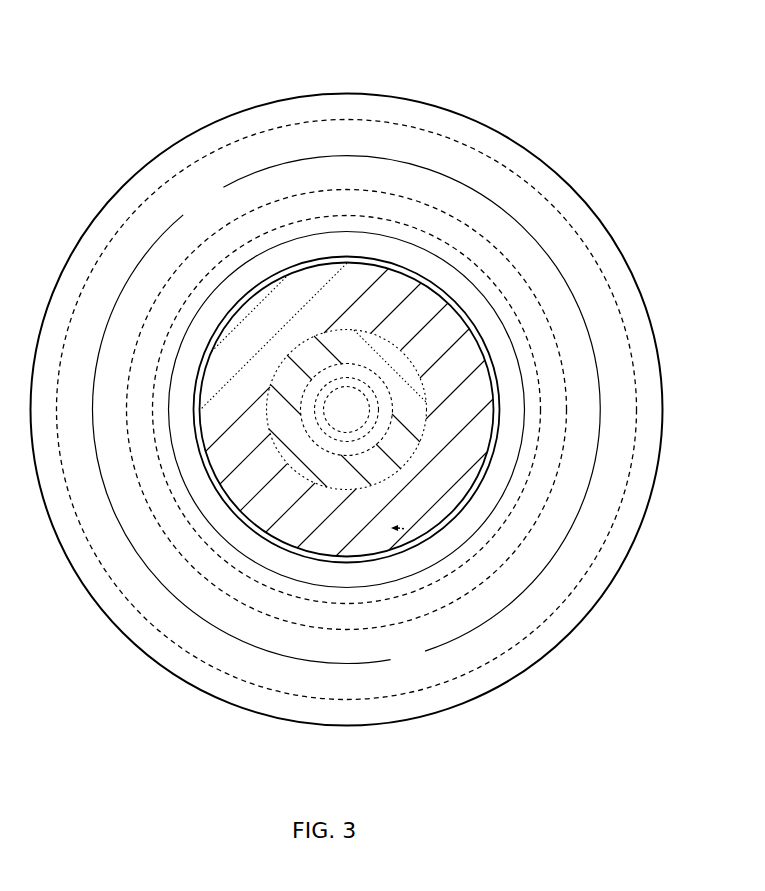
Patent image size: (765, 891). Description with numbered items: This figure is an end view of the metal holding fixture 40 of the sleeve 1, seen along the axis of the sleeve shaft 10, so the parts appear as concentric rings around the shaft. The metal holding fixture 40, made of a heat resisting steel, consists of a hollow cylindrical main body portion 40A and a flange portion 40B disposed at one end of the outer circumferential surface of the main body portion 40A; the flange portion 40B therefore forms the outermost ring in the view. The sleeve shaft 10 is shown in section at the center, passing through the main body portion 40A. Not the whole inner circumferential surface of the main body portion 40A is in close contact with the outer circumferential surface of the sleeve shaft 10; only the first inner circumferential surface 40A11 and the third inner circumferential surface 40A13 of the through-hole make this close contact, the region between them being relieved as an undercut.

The sleeve 1 is at (456, 68).
The sleeve shaft 10 is at (427, 547).
The metal holding fixture 40 is at (628, 86).
The main body portion 40A is at (452, 265).
The flange portion 40B is at (602, 213).
The first inner circumferential surface 40A11 is at (317, 548).
The third inner circumferential surface 40A13 is at (347, 519).